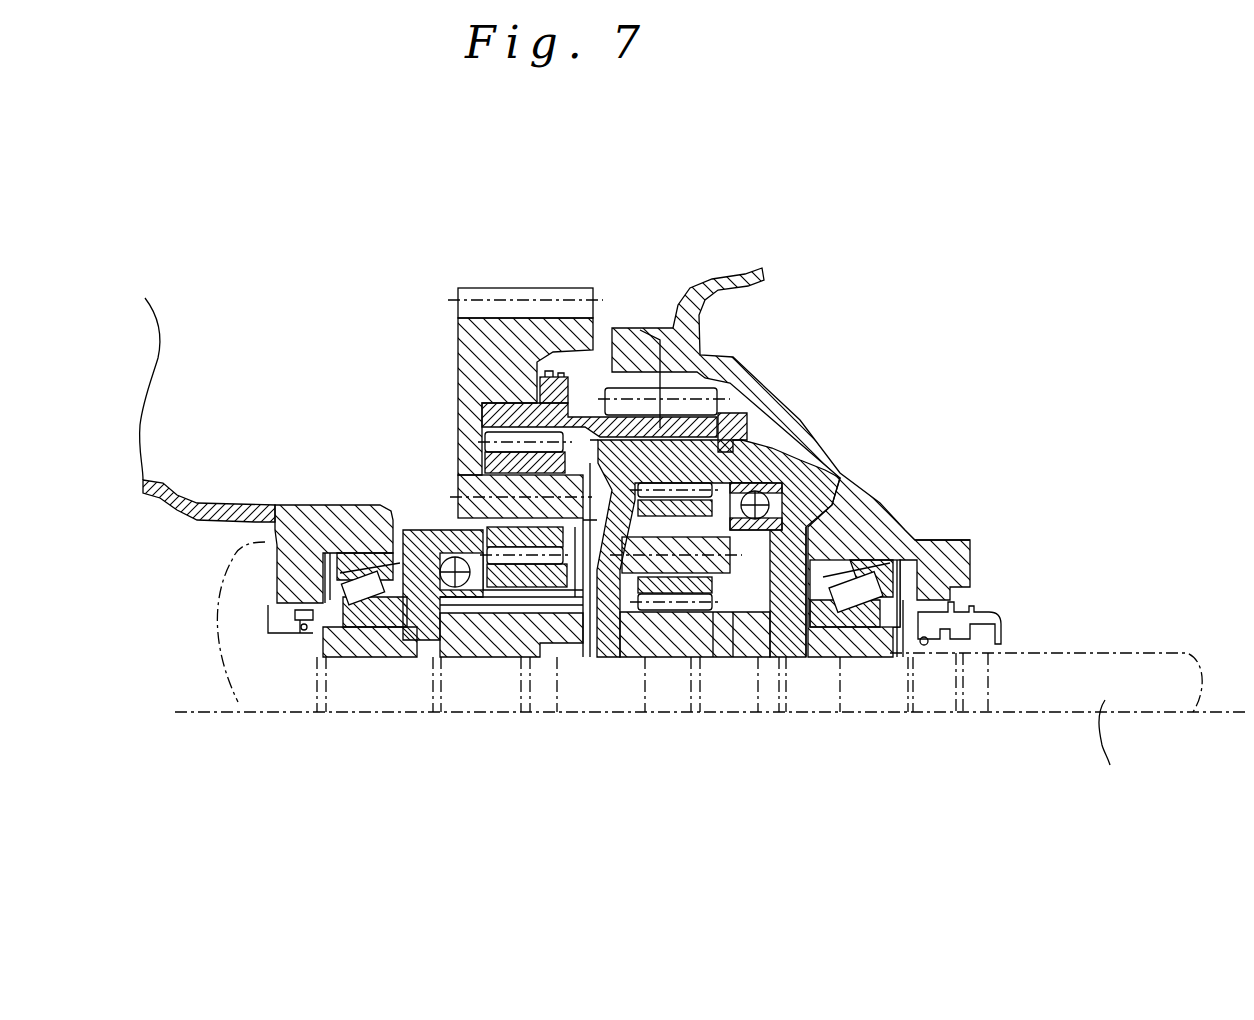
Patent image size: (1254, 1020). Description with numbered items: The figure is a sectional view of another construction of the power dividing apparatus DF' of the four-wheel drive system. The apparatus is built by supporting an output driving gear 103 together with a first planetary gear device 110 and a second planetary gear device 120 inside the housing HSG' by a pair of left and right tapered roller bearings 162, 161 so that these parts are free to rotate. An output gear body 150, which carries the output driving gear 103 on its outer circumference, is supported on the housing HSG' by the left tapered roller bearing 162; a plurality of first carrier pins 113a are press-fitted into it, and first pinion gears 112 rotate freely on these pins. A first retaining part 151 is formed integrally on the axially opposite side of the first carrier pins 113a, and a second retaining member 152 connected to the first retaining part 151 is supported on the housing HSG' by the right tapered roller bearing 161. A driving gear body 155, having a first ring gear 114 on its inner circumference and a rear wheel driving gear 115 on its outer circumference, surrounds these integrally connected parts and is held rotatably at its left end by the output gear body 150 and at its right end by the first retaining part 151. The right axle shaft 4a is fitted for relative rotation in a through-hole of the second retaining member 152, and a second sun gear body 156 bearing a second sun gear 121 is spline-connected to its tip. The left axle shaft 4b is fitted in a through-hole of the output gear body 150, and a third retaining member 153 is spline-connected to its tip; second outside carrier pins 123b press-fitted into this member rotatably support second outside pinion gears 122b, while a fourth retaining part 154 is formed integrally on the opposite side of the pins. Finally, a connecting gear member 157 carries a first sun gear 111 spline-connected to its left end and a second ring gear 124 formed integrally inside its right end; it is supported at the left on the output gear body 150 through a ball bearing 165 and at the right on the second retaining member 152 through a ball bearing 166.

The first planetary gear device 110 is at (538, 522).
The output driving gear 103 is at (526, 298).
The output gear body 150 is at (470, 355).
The first ring gear 114 is at (478, 443).
The first pinion gears 112 is at (478, 468).
The first carrier pins 113a is at (470, 492).
The driving gear body 155 is at (660, 428).
The rear wheel driving gear 115 is at (690, 395).
The second planetary gear device 120 is at (806, 462).
The first retaining part 151 is at (768, 433).
The second ring gear 124 is at (772, 462).
The second retaining member 152 is at (827, 475).
The housing HSG' is at (806, 462).
The ball bearing 166 is at (770, 524).
The right tapered roller bearing 161 is at (845, 625).
The second sun gear body 156 is at (715, 618).
The fourth retaining part 154 is at (733, 612).
The second outside pinion gears 122b is at (700, 640).
The second sun gear 121 is at (655, 645).
The second outside carrier pins 123b is at (603, 590).
The connecting gear member 157 is at (560, 615).
The third retaining member 153 is at (492, 600).
The ball bearing 165 is at (430, 585).
The left tapered roller bearing 162 is at (360, 615).
The first sun gear 111 is at (478, 605).
The right axle shaft 4a is at (1110, 765).
The left axle shaft 4b is at (276, 705).
The power dividing apparatus DF' is at (975, 421).